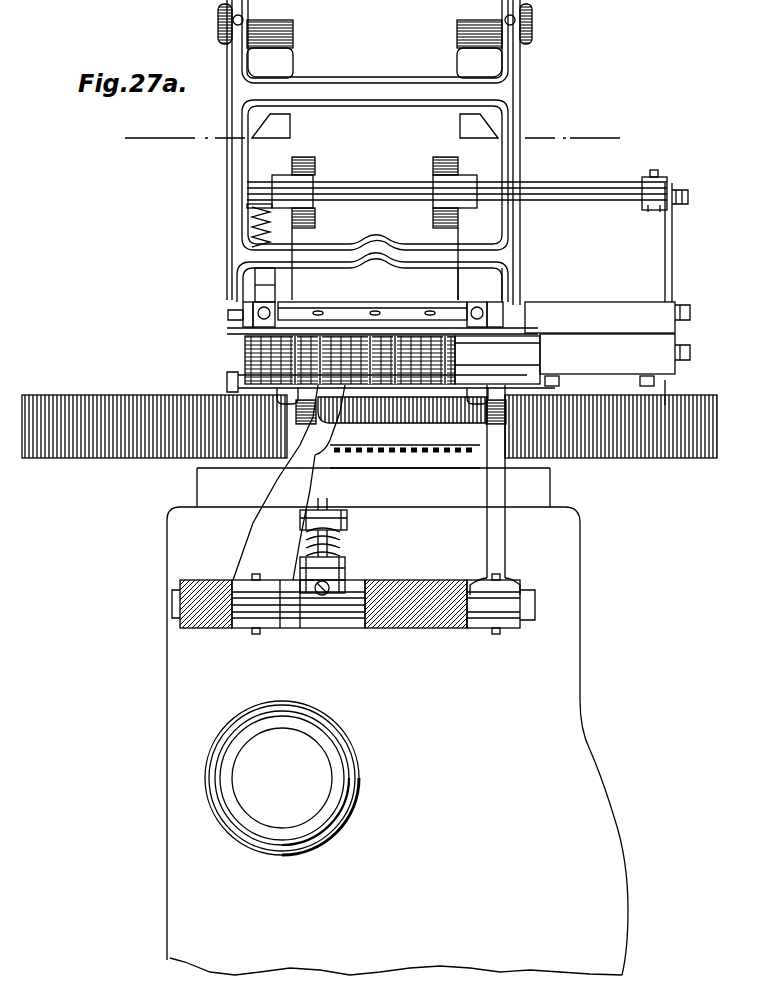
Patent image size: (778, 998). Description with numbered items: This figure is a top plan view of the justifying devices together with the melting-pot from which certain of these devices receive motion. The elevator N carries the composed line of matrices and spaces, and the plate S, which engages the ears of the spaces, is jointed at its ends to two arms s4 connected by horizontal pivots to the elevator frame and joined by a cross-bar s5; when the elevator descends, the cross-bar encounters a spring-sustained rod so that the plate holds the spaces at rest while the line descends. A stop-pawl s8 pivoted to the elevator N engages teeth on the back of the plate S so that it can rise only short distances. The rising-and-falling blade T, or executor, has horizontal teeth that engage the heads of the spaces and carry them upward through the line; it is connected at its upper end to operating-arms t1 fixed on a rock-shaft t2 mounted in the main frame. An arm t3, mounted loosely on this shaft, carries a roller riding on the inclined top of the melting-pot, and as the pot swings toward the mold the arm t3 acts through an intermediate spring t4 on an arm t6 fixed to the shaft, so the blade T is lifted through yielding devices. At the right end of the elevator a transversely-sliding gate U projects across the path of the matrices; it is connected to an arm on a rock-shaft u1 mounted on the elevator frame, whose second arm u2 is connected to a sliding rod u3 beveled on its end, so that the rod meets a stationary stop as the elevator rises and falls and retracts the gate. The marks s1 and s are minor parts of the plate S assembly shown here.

The elevator N is at (375, 41).
The arms s4 is at (512, 100).
The cross-bar s5 is at (386, 243).
The stop-pawl s8 is at (272, 286).
The bearing block with pivot s1 is at (276, 312).
The plate S is at (392, 330).
The bearing block s is at (485, 305).
The rock-shaft u1 is at (457, 228).
The second arm u2 is at (652, 210).
The sliding rod u3 is at (666, 262).
The transversely-sliding dog or gate U is at (246, 340).
The rising-and-falling blade T is at (369, 419).
The operating-arms t1 is at (376, 490).
The rock-shaft t2 is at (538, 600).
The arm t3 is at (292, 632).
The intermediate spring t4 is at (348, 548).
The arm t6 is at (335, 618).